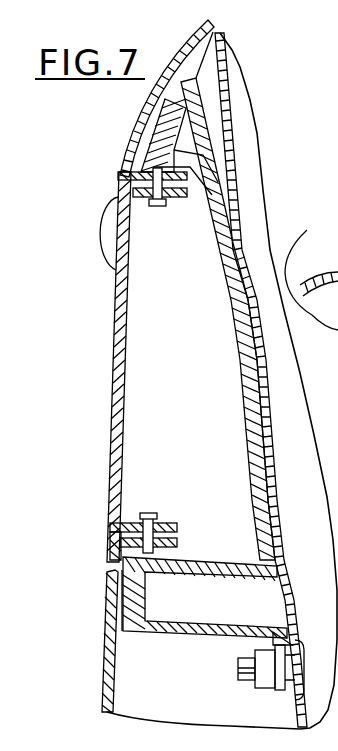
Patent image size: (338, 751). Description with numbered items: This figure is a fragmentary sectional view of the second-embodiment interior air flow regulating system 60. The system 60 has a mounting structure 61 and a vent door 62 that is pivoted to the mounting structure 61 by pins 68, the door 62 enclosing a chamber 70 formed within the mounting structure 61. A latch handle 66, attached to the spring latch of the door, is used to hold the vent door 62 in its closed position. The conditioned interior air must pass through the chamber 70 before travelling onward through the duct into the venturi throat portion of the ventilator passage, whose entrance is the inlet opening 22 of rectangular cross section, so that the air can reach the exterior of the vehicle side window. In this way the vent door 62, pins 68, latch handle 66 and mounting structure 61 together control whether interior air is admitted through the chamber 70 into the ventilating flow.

The inlet opening 22 is at (307, 230).
The interior air flow regulating system 60 is at (104, 439).
The mounting structure 61 is at (107, 606).
The vent door 62 is at (113, 396).
The latch handle 66 is at (98, 241).
The pins 68 is at (160, 205).
The chamber 70 is at (196, 393).